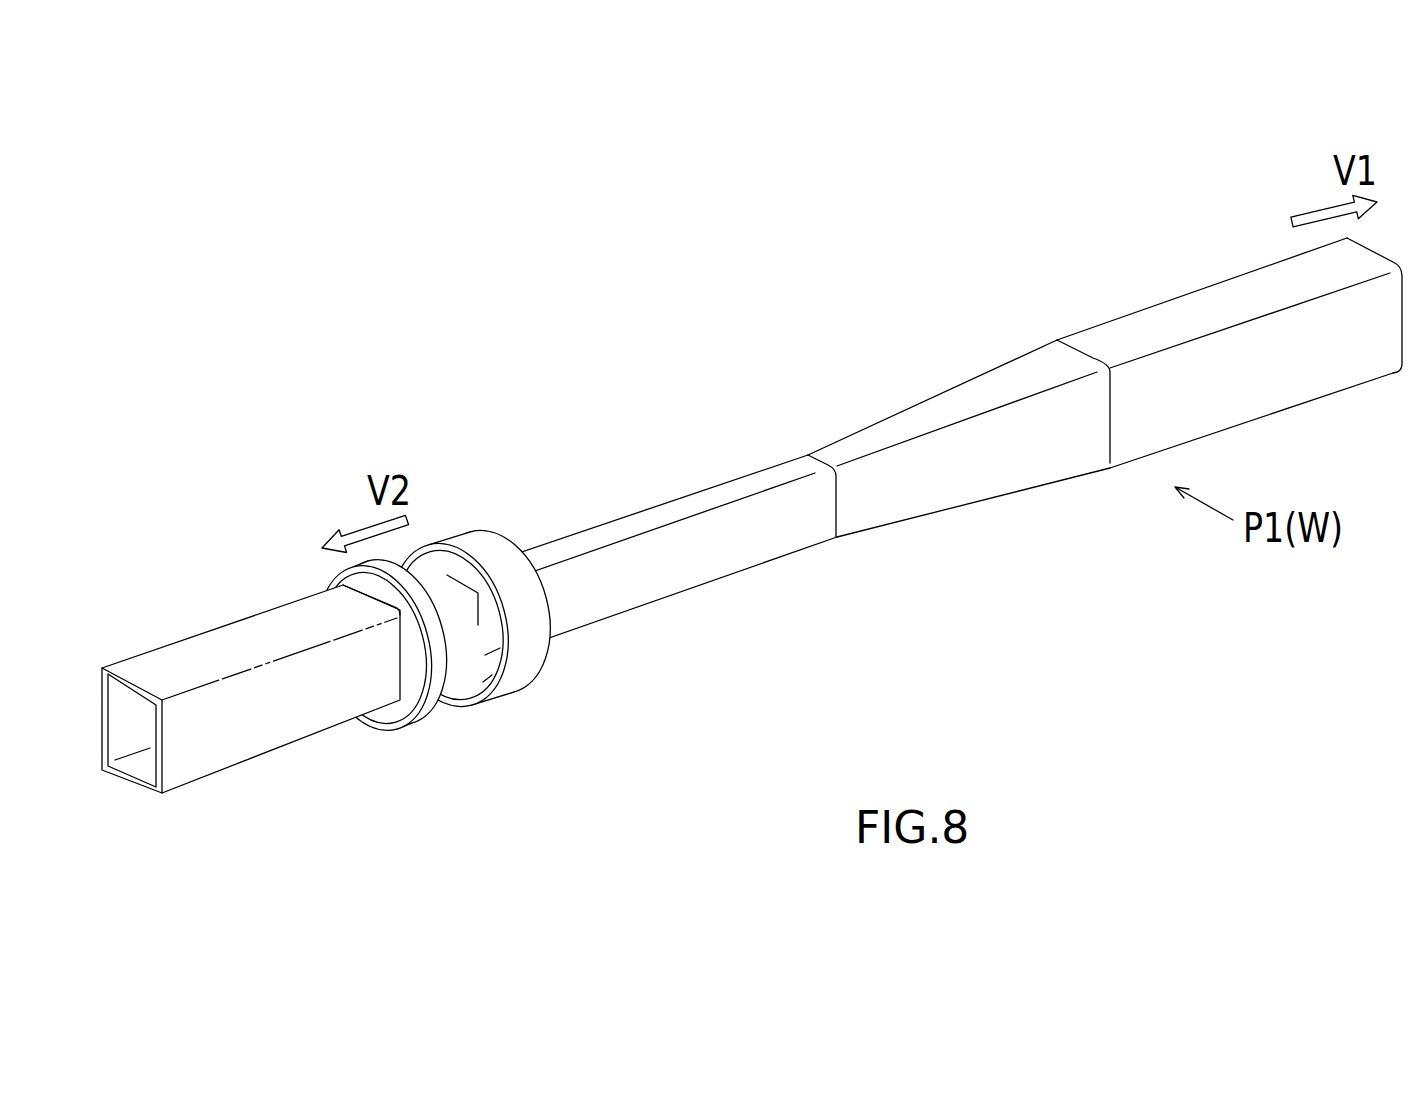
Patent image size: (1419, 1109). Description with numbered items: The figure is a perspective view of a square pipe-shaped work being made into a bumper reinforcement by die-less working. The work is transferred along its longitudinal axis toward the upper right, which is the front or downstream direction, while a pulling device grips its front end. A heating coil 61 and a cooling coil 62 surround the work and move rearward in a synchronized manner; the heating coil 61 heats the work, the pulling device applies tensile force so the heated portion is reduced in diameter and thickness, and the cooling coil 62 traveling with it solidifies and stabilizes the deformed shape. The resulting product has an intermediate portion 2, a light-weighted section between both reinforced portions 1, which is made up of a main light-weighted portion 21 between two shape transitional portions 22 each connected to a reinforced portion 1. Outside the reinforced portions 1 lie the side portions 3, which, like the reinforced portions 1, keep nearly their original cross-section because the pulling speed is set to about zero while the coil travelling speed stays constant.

The reinforced portion 1 is at (752, 525).
The intermediate portion 2 is at (801, 466).
The side portion 3 is at (198, 750).
The main light-weighted portion 21 is at (652, 518).
The shape transitional portion 22 is at (912, 417).
The heating coil 61 is at (453, 692).
The cooling coil 62 is at (532, 653).